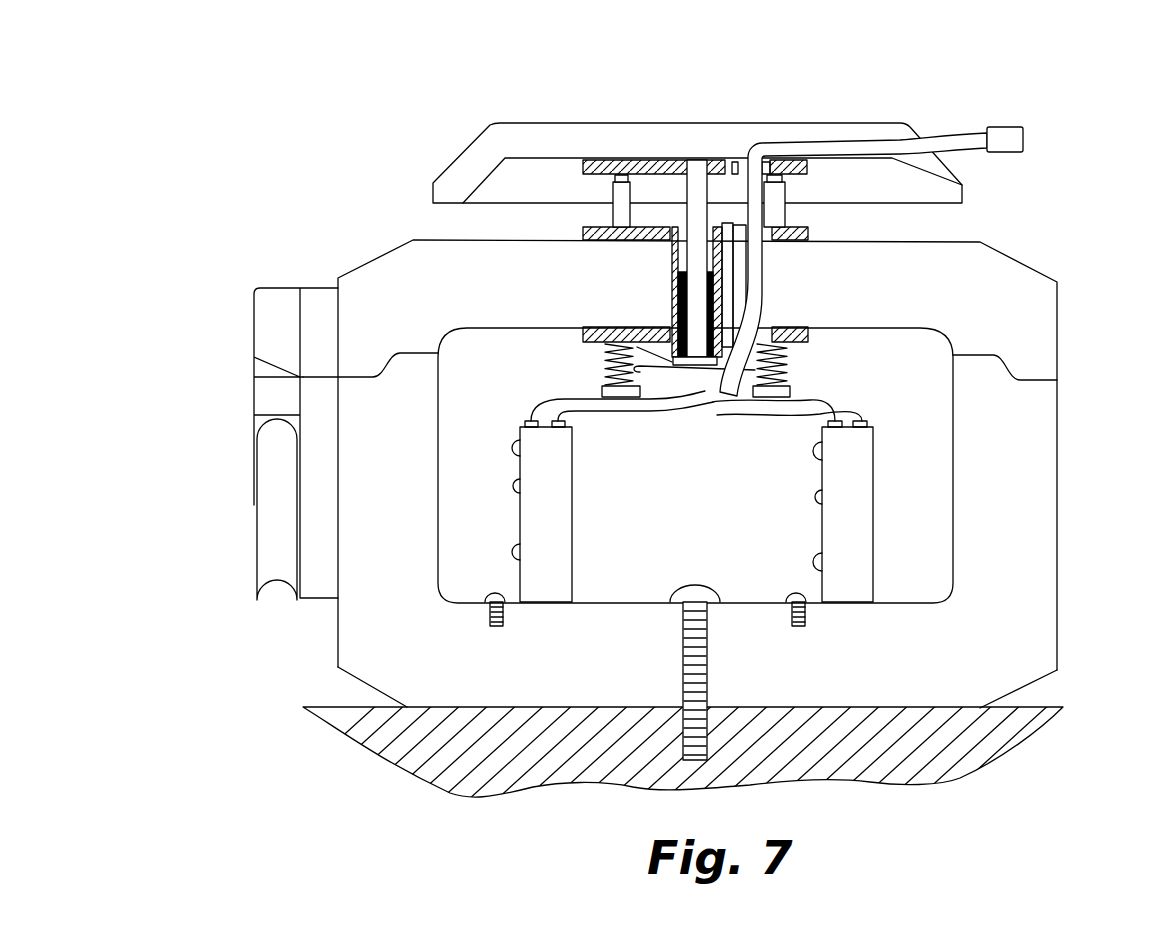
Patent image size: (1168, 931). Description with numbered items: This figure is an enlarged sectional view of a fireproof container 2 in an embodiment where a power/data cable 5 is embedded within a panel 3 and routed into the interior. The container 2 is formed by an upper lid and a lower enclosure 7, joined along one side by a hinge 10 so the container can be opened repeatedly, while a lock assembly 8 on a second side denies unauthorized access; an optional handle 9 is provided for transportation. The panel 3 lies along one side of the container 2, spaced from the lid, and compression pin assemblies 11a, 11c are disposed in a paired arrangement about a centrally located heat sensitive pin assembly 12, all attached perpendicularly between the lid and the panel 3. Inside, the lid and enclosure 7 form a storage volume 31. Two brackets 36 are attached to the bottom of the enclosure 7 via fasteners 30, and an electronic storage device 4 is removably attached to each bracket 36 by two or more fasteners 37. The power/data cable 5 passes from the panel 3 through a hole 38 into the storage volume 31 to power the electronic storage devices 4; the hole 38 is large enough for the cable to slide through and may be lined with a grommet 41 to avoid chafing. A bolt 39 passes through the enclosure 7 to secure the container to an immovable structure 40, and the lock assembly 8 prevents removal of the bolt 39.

The container 2 is at (1057, 515).
The panel 3 is at (885, 125).
The electronic storage device 4 is at (572, 463).
The power/data cable 5 is at (1007, 153).
The lower enclosure 7 is at (1057, 578).
The lock assembly 8 is at (254, 335).
The handle 9 is at (268, 565).
The hinge 10 is at (1057, 378).
The compression pin assembly 11a is at (613, 215).
The compression pin assembly 11c is at (786, 207).
The heat sensitive pin assembly 12 is at (687, 185).
The fastener 30 is at (497, 590).
The storage volume 31 is at (527, 379).
The bracket 36 is at (518, 495).
The fastener 37 is at (518, 450).
The hole 38 is at (735, 162).
The bolt 39 is at (698, 587).
The immovable structure 40 is at (484, 752).
The grommet 41 is at (722, 160).